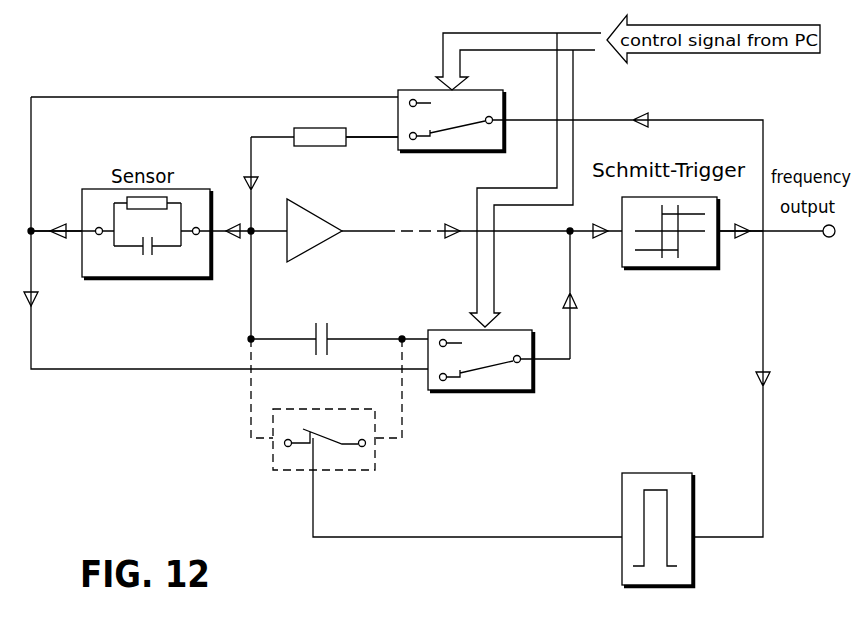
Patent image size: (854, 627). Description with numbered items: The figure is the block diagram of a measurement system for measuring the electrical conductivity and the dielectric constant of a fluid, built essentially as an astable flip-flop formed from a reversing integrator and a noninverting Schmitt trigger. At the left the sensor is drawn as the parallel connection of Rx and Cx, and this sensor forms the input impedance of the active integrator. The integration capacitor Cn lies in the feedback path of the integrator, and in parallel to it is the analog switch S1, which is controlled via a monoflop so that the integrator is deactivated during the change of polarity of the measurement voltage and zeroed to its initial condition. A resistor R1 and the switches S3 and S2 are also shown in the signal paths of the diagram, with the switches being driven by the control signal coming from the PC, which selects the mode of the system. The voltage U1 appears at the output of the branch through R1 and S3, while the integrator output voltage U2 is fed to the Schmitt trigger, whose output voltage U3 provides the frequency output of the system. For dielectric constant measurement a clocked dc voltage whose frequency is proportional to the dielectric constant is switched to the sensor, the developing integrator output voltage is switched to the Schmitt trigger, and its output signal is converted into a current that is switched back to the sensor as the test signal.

The analog switch S1 is at (326, 427).
The switch S2 is at (486, 380).
The switch S3 is at (451, 138).
The resistor R1 is at (324, 157).
The sensor resistance Rx is at (147, 218).
The sensor capacitance Cx is at (151, 257).
The integration capacitor Cn is at (326, 330).
The voltage U1 is at (372, 154).
The voltage U2 is at (317, 212).
The voltage U3 is at (740, 213).